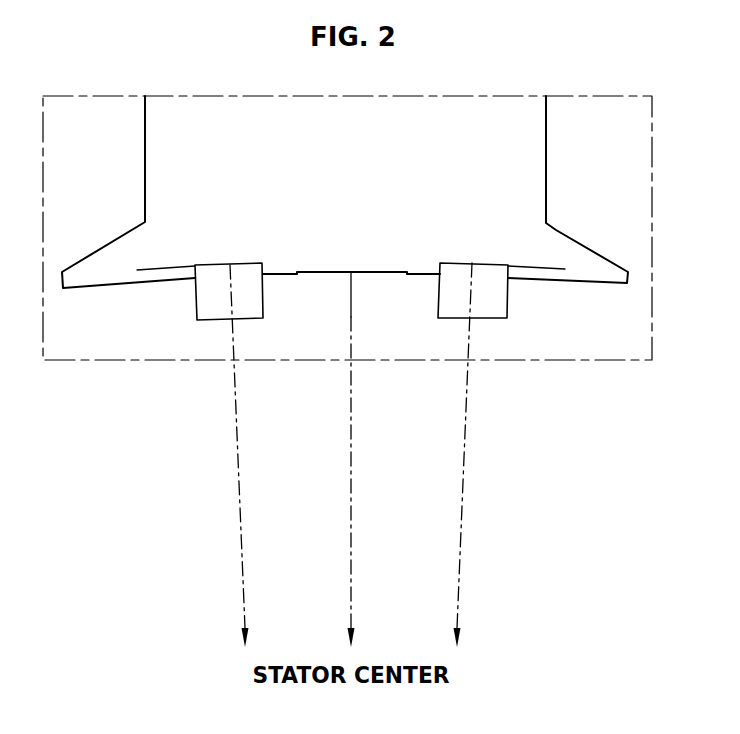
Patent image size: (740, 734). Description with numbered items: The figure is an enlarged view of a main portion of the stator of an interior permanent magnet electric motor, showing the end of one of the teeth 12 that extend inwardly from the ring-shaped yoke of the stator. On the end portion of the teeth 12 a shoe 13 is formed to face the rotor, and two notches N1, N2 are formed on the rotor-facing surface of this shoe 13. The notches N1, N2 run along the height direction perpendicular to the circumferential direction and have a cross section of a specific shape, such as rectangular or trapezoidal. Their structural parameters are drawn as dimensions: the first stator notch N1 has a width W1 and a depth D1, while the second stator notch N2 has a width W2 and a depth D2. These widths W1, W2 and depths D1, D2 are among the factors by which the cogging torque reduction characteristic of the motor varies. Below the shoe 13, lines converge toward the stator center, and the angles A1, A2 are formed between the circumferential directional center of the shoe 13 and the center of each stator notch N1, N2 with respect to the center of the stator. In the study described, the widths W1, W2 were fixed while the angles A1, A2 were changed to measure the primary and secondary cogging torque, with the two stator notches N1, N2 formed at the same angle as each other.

The teeth 12 is at (530, 156).
The shoe 13 is at (98, 257).
The stator notch N1 is at (213, 265).
The stator notch N2 is at (482, 263).
The width of stator notch W1 is at (263, 317).
The width of stator notch W2 is at (438, 315).
The depth of stator notch D1 is at (145, 240).
The depth of stator notch D2 is at (558, 240).
The angle A1 is at (351, 452).
The angle A2 is at (466, 458).